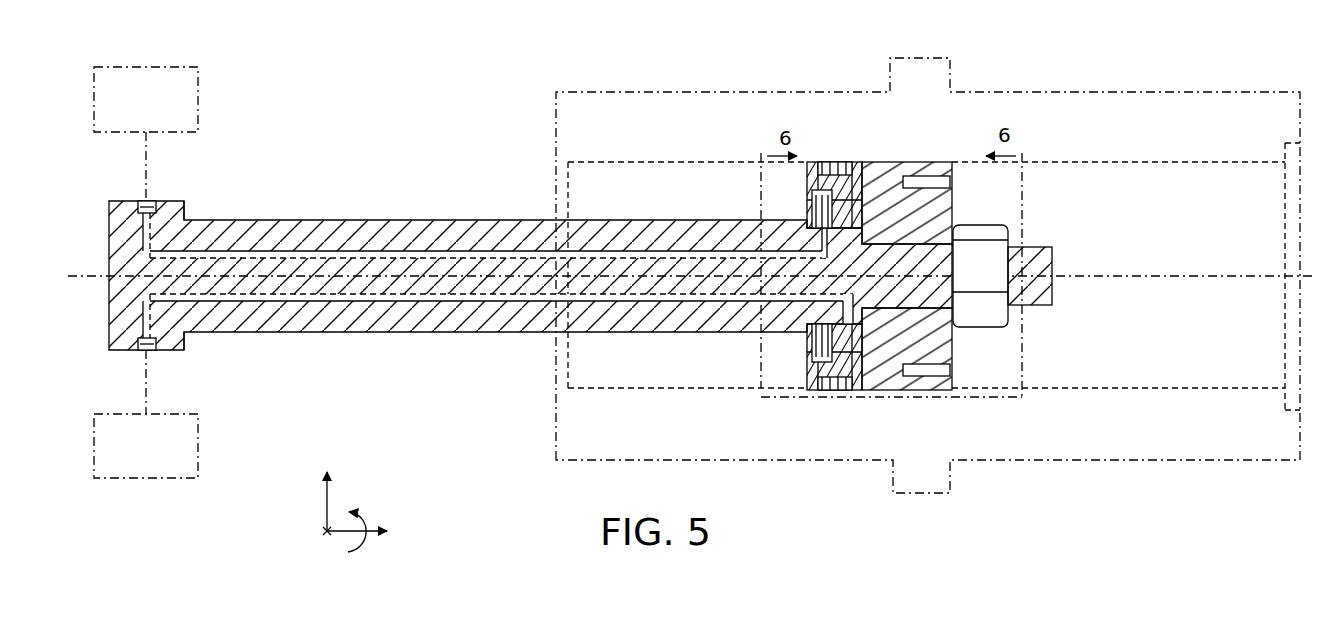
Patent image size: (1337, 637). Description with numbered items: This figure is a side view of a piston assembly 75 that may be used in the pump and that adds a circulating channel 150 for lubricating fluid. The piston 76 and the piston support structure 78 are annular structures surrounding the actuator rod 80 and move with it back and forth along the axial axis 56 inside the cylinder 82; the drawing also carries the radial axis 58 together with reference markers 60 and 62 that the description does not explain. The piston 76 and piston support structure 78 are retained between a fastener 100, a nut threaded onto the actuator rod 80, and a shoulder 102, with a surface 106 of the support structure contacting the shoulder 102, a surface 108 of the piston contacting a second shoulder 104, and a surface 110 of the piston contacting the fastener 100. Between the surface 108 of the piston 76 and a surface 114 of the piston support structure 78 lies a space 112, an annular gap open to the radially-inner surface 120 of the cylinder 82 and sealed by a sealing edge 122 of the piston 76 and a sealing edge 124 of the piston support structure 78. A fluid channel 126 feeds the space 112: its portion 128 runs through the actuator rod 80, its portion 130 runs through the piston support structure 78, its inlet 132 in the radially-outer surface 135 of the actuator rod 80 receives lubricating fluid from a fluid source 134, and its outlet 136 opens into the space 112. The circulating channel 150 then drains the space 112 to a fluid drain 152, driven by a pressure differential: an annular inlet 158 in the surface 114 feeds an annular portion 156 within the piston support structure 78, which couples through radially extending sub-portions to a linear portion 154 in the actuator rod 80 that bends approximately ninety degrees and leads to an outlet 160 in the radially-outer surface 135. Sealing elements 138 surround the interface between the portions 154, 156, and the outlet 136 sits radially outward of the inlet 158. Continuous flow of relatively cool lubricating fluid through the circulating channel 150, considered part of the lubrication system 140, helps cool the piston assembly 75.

The axial axis 56 is at (345, 531).
The radial axis 58 is at (327, 500).
The first axis 60 is at (322, 531).
The rotation direction 62 is at (350, 518).
The piston assembly 75 is at (512, 192).
The piston 76 is at (955, 187).
The piston support structure 78 is at (812, 165).
The actuator rod 80 is at (311, 228).
The cylinder 82 is at (1122, 90).
The fastener 100 is at (992, 326).
The shoulder 102 is at (822, 238).
The shoulder 104 is at (808, 318).
The surface 106 is at (809, 210).
The surface 108 is at (873, 305).
The surface 110 is at (955, 217).
The space 112 is at (856, 166).
The surface 114 is at (808, 190).
The radially-inner surface 120 is at (1220, 164).
The sealing edge 122 is at (868, 166).
The sealing edge 124 is at (831, 170).
The fluid channel 126 is at (437, 256).
The portion 128 is at (380, 256).
The portion 130 is at (838, 166).
The inlet 132 is at (146, 202).
The fluid source 134 is at (148, 64).
The radially-outer surface 135 is at (270, 220).
The outlet 136 is at (899, 162).
The sealing elements 138 is at (953, 200).
The lubrication system 140 is at (434, 158).
The circulating channel 150 is at (272, 302).
The fluid drain 152 is at (148, 480).
The portion 154 is at (365, 302).
The portion 156 is at (880, 320).
The inlet 158 is at (875, 391).
The outlet 160 is at (140, 351).